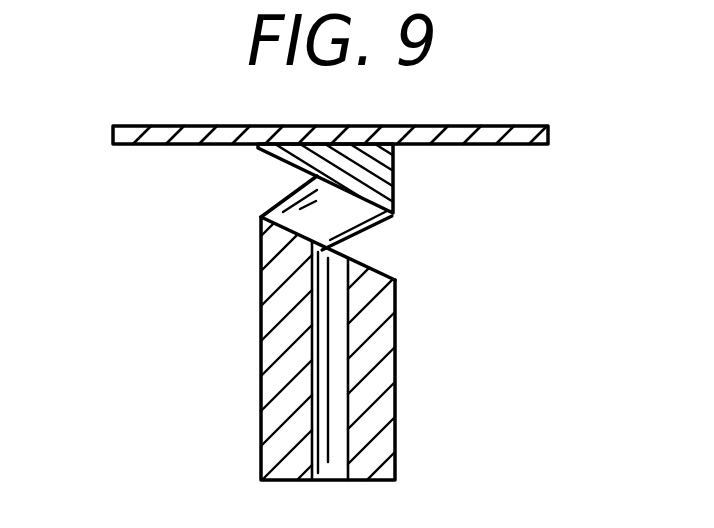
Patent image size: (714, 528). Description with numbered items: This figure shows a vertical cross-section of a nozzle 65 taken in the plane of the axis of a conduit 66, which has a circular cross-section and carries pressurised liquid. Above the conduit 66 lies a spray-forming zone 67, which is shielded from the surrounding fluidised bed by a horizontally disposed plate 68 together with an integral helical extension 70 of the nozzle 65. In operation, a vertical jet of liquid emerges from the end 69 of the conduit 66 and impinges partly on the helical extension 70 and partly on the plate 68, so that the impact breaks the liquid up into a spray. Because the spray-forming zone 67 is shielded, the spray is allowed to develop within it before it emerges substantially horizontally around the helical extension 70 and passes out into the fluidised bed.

The nozzle 65 is at (261, 298).
The conduit 66 is at (397, 422).
The spray-forming zone 67 is at (372, 224).
The plate 68 is at (178, 145).
The end of conduit 69 is at (347, 254).
The helical extension 70 is at (373, 182).